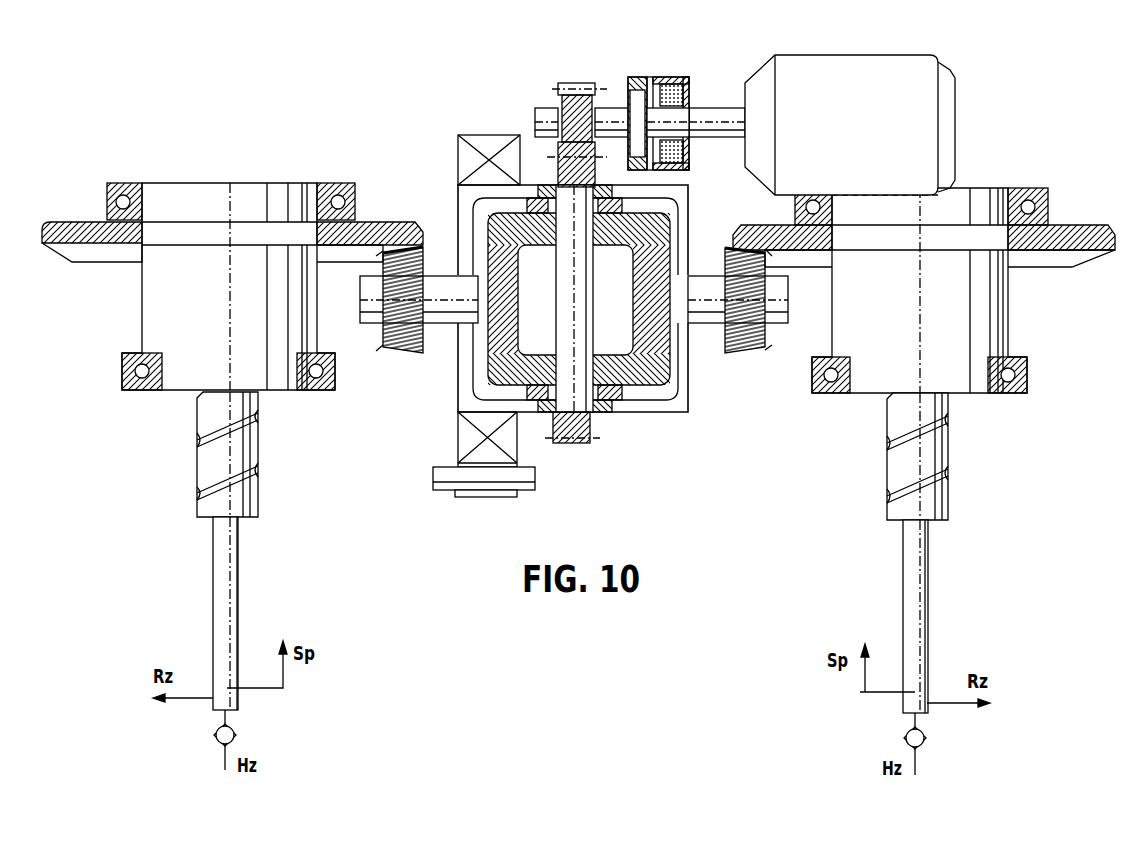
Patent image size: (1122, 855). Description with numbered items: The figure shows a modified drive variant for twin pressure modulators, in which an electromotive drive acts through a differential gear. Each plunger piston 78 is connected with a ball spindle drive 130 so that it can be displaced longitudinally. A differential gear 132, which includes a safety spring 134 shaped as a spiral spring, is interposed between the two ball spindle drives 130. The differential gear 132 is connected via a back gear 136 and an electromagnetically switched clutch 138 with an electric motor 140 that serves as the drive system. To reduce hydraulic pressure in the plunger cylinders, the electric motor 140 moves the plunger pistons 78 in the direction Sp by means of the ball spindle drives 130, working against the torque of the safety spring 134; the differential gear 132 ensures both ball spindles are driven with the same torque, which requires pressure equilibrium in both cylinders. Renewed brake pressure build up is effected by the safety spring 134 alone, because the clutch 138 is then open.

The plunger piston 78 is at (225, 577).
The ball spindle drive 130 is at (157, 299).
The differential gear 132 is at (640, 407).
The safety spring 134 is at (468, 438).
The back gear 136 is at (556, 98).
The electromagnetically switched clutch 138 is at (689, 85).
The electric motor 140 is at (930, 110).